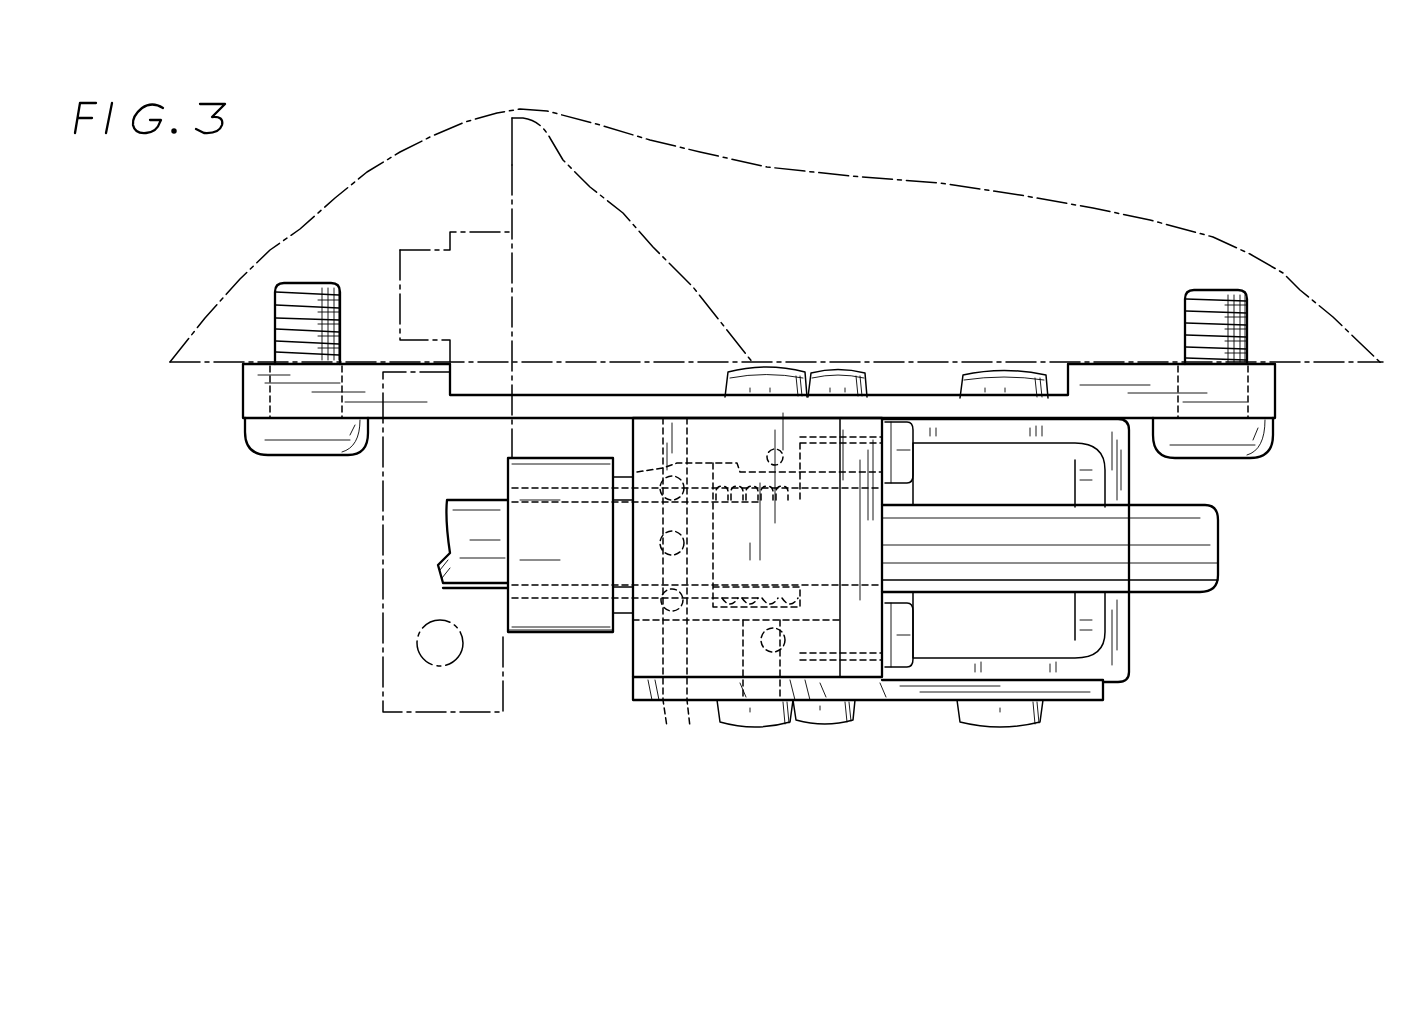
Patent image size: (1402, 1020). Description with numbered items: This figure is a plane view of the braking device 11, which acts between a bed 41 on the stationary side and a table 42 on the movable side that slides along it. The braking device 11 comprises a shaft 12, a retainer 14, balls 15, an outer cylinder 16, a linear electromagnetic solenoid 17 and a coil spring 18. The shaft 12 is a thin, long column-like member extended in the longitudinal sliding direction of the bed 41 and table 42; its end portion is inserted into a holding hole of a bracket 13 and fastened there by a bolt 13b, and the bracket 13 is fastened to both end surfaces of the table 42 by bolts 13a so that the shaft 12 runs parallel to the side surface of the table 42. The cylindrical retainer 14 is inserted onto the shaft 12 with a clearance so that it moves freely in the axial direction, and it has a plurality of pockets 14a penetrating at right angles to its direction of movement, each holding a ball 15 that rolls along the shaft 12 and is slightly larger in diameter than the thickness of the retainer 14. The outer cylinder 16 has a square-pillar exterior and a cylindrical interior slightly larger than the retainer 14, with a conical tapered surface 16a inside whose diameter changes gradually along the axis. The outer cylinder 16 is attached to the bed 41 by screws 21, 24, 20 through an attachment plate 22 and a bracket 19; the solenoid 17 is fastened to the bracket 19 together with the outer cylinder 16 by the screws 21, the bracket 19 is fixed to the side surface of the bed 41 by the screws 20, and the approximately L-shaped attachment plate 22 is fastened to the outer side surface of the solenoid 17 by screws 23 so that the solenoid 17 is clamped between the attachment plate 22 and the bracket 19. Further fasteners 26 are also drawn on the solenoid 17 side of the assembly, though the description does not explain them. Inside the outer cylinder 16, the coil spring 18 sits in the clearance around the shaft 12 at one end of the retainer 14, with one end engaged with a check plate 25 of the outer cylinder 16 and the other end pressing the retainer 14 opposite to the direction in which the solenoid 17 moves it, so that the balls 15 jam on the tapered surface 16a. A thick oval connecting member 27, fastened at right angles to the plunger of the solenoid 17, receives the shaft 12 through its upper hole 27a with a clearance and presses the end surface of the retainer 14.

The braking device 11 is at (398, 492).
The shaft 12 is at (1175, 580).
The bracket 13 is at (383, 607).
The bolts 13a is at (404, 282).
The bolt 13b is at (433, 657).
The retainer 14 is at (620, 617).
The pockets 14a is at (692, 590).
The balls 15 is at (612, 573).
The outer cylinder 16 is at (686, 432).
The conical tapered surface 16a is at (797, 728).
The linear electromagnetic solenoid 17 is at (1153, 672).
The coil spring 18 is at (858, 720).
The bracket 19 is at (1267, 403).
The screws 20 is at (302, 440).
The screws 21 is at (853, 377).
The attachment plate 22 is at (1087, 692).
The screws 23 is at (857, 717).
The screws 24 is at (754, 385).
The check plate 25 is at (827, 670).
The screw 26 is at (915, 460).
The connecting member 27 is at (570, 578).
The upper hole 27a is at (527, 620).
The bed 41 is at (470, 187).
The table 42 is at (607, 307).